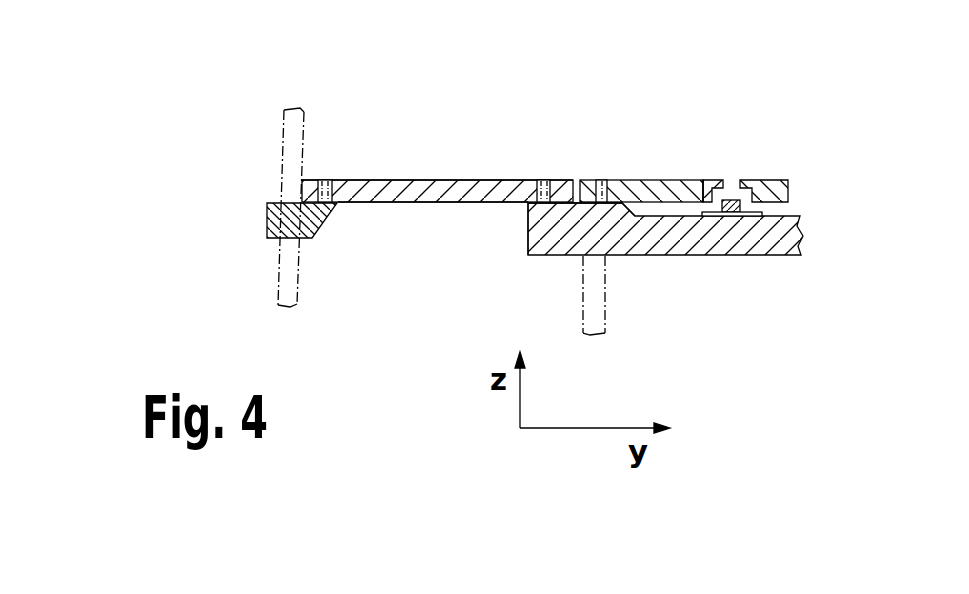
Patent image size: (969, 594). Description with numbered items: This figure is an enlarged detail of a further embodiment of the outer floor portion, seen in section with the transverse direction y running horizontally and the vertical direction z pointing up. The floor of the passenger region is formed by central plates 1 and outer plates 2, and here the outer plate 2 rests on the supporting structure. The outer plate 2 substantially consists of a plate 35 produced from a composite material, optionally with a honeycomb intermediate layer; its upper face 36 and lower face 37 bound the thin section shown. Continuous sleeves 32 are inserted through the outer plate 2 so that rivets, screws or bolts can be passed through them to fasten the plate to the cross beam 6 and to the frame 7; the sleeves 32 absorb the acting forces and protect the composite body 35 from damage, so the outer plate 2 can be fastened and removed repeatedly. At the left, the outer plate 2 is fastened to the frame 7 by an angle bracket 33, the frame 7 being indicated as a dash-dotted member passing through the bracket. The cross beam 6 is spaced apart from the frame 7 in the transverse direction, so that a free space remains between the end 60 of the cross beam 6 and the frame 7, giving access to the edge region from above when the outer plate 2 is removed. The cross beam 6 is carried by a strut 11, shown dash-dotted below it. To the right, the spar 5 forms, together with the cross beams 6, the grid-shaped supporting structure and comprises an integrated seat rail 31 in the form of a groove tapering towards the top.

The central plate 1 is at (641, 132).
The outer plate 2 is at (476, 132).
The spar 5 is at (733, 207).
The cross beam 6 is at (780, 242).
The frame 7 is at (283, 153).
The strut 11 is at (598, 295).
The seat rail 31 is at (735, 160).
The sleeve 32 is at (323, 182).
The angle bracket 33 is at (268, 213).
The plate 35 is at (413, 193).
The upper surface of plate 36 is at (402, 180).
The lower surface of plate 37 is at (360, 203).
The end of cross beam 60 is at (528, 227).